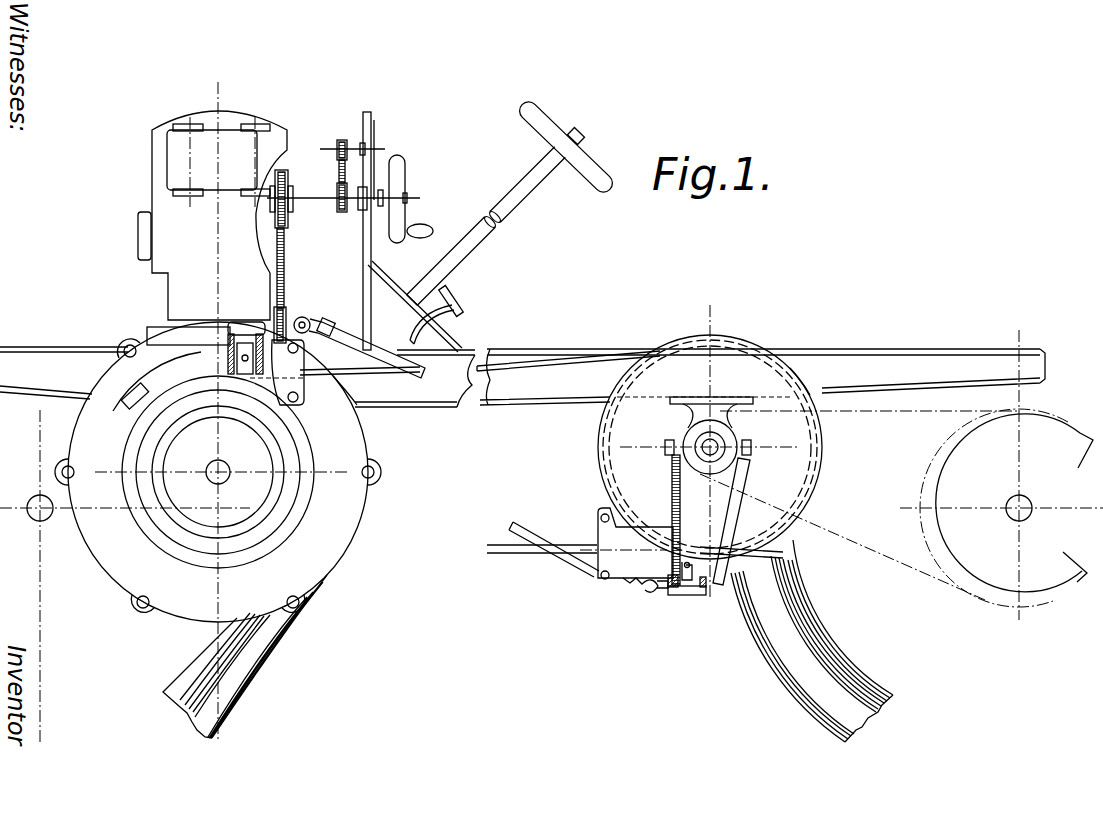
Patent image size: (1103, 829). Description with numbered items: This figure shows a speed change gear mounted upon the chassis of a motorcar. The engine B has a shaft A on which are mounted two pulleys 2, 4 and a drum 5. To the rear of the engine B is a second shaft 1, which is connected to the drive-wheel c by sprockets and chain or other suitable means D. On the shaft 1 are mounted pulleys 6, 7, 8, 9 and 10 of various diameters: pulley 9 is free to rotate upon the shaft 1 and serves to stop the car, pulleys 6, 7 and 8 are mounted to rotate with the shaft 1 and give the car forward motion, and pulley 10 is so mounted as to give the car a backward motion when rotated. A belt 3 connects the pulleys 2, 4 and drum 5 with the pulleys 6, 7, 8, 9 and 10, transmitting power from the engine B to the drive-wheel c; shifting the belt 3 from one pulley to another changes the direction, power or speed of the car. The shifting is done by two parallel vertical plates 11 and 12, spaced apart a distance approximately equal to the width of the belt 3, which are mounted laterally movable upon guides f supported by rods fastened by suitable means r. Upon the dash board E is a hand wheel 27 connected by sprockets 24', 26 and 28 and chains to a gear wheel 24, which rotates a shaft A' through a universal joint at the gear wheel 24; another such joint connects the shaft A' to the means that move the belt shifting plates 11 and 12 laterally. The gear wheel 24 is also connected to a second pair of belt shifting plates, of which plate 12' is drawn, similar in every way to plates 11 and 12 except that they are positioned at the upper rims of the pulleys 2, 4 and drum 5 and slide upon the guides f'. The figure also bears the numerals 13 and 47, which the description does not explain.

The engine B is at (160, 252).
The sprocket 26 is at (290, 222).
The sprocket 24' is at (297, 285).
The sprocket 28 is at (372, 151).
The dash board E is at (392, 98).
The wheel 27 is at (406, 177).
The gear wheel 24 is at (359, 335).
The clamp bracket 13 is at (240, 333).
The bracket plate 47 is at (300, 379).
The belt shifting plate 11 is at (286, 398).
The belt shifting plate 12' is at (133, 386).
The guide f' is at (191, 406).
The engine shaft A is at (204, 472).
The pulley 2 is at (134, 530).
The pulley 4 is at (162, 530).
The drum 5 is at (190, 548).
The belt 3 is at (366, 376).
The shaft A' is at (480, 464).
The pulley 6 is at (735, 333).
The pulley 7 is at (752, 345).
The pulley 8 is at (770, 355).
The pulley 9 is at (807, 348).
The pulley 10 is at (825, 355).
The shaft 1 is at (705, 455).
The fastening means r is at (668, 442).
The chain o is at (672, 475).
The guide f is at (697, 611).
The drive-wheel c is at (647, 592).
The sprockets and chain D is at (848, 548).
The belt shifting plate 12 is at (809, 641).